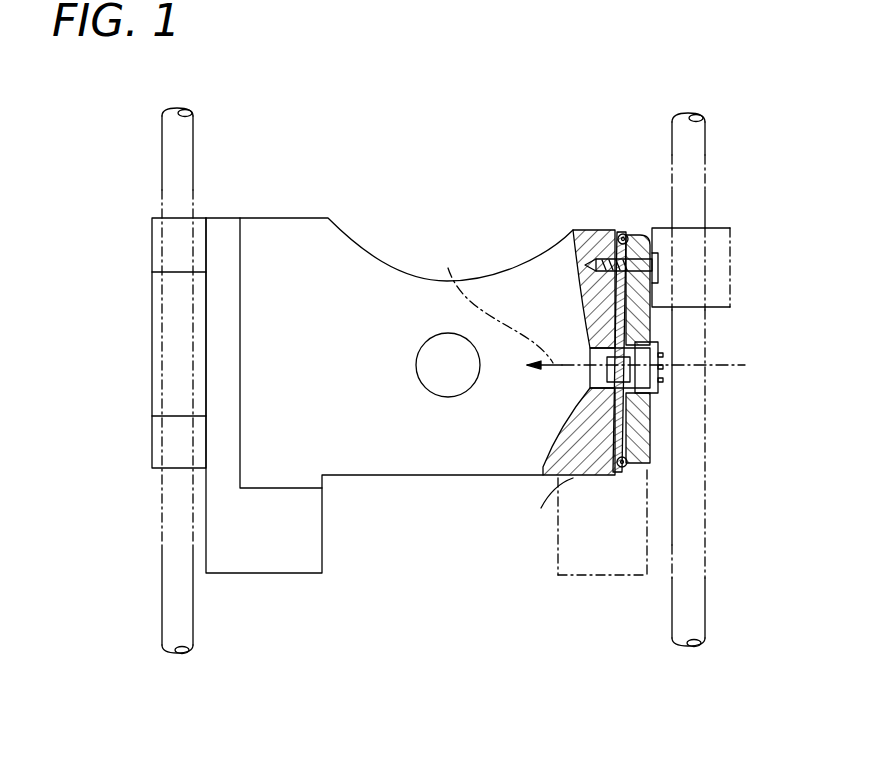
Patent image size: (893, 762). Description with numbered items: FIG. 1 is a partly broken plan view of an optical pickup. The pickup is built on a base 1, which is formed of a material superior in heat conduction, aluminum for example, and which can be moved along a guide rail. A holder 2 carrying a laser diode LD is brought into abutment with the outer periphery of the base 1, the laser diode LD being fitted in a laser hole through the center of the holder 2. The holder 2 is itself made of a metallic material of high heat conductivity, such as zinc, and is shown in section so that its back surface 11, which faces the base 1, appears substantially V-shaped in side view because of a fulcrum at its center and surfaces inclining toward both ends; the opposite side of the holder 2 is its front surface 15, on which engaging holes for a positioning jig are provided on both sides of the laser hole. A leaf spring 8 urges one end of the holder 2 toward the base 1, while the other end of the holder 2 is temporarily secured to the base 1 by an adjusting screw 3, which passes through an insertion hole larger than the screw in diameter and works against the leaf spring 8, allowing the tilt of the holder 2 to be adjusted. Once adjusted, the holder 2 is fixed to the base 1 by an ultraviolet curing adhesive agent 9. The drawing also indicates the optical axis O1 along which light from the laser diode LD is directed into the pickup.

The base 1 is at (452, 478).
The holder 2 is at (648, 460).
The adjusting screw 3 is at (658, 268).
The leaf spring 8 is at (568, 262).
The ultraviolet curing adhesive agent 9 is at (622, 232).
The back surface 11 is at (573, 474).
The front surface 15 is at (648, 435).
The laser diode LD is at (664, 352).
The optical axis O1 is at (495, 305).